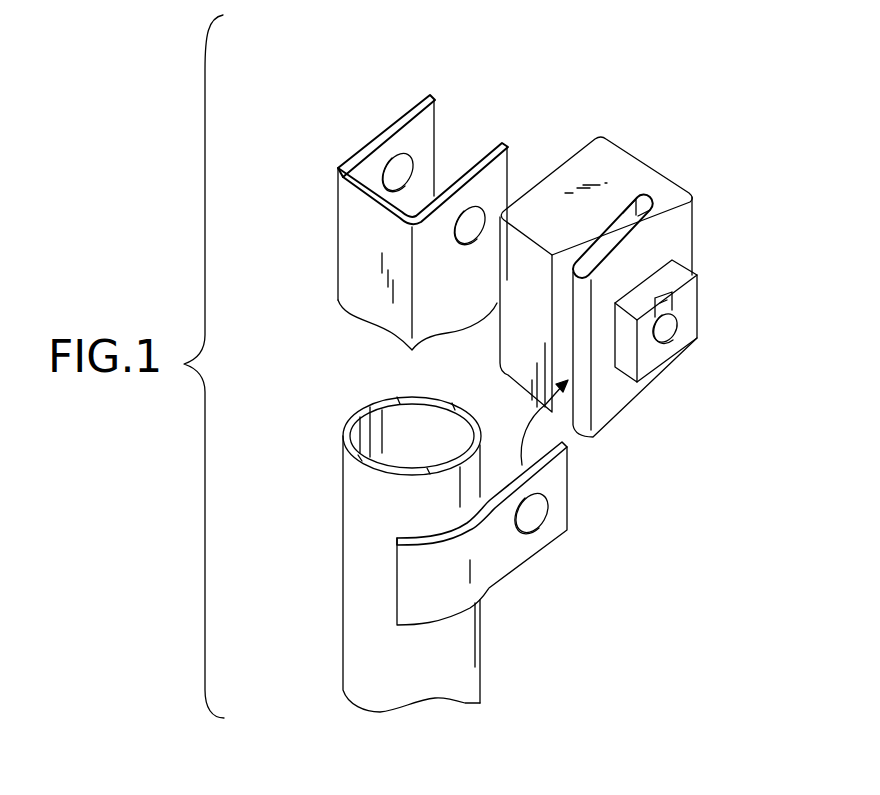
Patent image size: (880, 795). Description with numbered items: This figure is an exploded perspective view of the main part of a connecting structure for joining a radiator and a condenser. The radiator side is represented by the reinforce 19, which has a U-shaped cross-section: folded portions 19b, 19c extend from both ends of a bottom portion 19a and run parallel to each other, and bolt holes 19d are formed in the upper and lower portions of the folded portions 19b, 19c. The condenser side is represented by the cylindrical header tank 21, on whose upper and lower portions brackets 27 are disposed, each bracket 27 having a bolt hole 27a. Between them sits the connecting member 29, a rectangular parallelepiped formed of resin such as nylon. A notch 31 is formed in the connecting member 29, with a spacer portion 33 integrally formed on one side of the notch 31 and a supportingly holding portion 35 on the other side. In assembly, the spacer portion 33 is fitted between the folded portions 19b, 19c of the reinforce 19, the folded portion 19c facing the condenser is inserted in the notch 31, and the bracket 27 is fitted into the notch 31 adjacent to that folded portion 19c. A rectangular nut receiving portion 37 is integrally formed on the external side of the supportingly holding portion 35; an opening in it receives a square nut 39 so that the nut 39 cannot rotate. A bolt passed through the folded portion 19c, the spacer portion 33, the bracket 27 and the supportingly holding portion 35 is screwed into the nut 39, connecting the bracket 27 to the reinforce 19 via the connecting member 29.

The reinforce 19 is at (353, 143).
The bottom portion 19a is at (353, 249).
The folded portion 19b is at (433, 97).
The folded portion 19c is at (517, 280).
The bolt hole 19d is at (398, 170).
The header tank 21 is at (458, 662).
The bracket 27 is at (507, 553).
The bolt hole 27a is at (545, 497).
The connecting member 29 is at (625, 140).
The notch 31 is at (650, 207).
The spacer portion 33 is at (600, 173).
The supportingly holding portion 35 is at (653, 220).
The nut receiving portion 37 is at (703, 338).
The square nut 39 is at (692, 271).